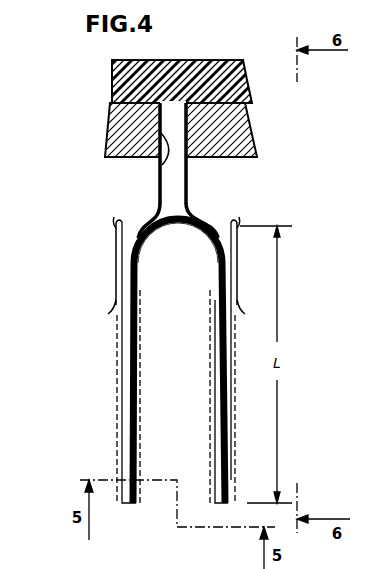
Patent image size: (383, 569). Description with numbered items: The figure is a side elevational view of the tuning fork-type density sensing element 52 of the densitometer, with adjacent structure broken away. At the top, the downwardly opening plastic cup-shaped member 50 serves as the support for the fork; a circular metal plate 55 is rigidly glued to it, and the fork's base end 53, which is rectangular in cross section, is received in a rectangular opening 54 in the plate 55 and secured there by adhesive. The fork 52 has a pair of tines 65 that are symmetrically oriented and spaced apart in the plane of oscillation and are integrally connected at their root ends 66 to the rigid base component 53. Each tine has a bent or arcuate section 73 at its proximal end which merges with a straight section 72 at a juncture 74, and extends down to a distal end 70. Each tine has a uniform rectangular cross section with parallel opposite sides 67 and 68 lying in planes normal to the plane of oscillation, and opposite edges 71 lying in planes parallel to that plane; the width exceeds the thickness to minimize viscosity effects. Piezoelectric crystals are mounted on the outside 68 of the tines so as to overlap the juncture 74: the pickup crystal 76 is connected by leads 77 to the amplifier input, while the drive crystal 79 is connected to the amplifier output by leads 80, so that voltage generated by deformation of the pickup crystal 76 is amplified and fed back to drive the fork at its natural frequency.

The cup-shaped member 50 is at (112, 88).
The circular metal plate 55 is at (253, 142).
The base end 53 is at (188, 172).
The rectangular opening 54 is at (160, 160).
The root ends 66 is at (160, 207).
The arcuate section 73 is at (203, 229).
The juncture 74 is at (216, 263).
The straight section 72 is at (215, 319).
The distal end 70 is at (111, 516).
The tuning fork-type density sensing element 52 is at (118, 374).
The parallel opposite side 67 is at (213, 368).
The outside of the tines 68 is at (231, 390).
The tines 65 is at (214, 448).
The opposite edges 71 is at (125, 452).
The drive crystal 79 is at (116, 262).
The leads 80 is at (116, 226).
The pickup crystal 76 is at (237, 264).
The leads 77 is at (240, 222).